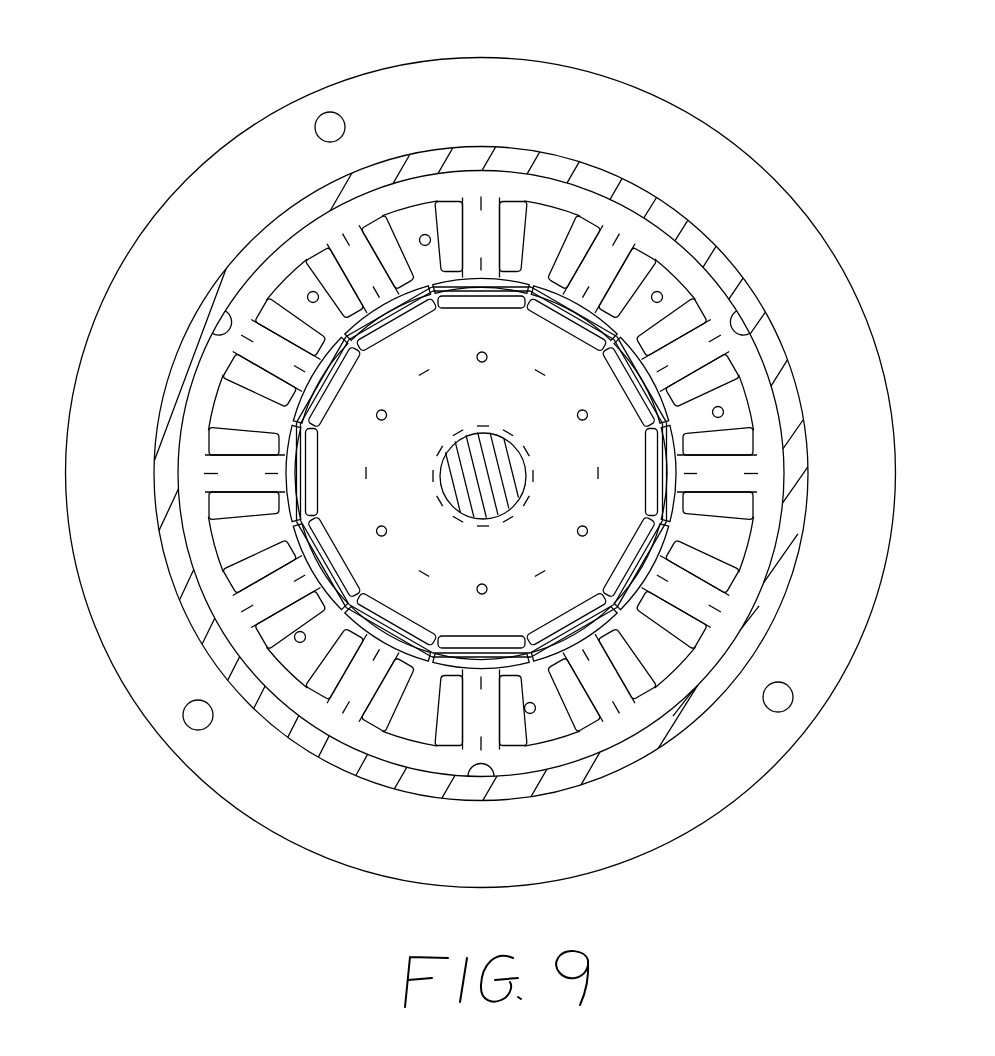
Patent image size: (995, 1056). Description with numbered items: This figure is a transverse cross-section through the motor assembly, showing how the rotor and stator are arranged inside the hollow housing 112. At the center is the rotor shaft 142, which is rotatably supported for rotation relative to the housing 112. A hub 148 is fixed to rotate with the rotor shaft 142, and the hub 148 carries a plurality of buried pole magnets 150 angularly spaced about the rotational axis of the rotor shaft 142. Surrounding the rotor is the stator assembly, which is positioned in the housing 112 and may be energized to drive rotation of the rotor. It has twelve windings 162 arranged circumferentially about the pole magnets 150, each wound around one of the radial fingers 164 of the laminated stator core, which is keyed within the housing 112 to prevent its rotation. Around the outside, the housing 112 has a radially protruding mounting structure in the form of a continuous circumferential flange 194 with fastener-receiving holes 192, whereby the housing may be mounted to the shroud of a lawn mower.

The housing 112 is at (508, 145).
The rotor shaft 142 is at (502, 467).
The hub 148 is at (513, 572).
The buried pole magnets 150 is at (482, 310).
The windings 162 is at (223, 428).
The radial fingers 164 is at (360, 675).
The fastener-receiving holes 192 is at (332, 112).
The continuous circumferential flange 194 is at (350, 832).